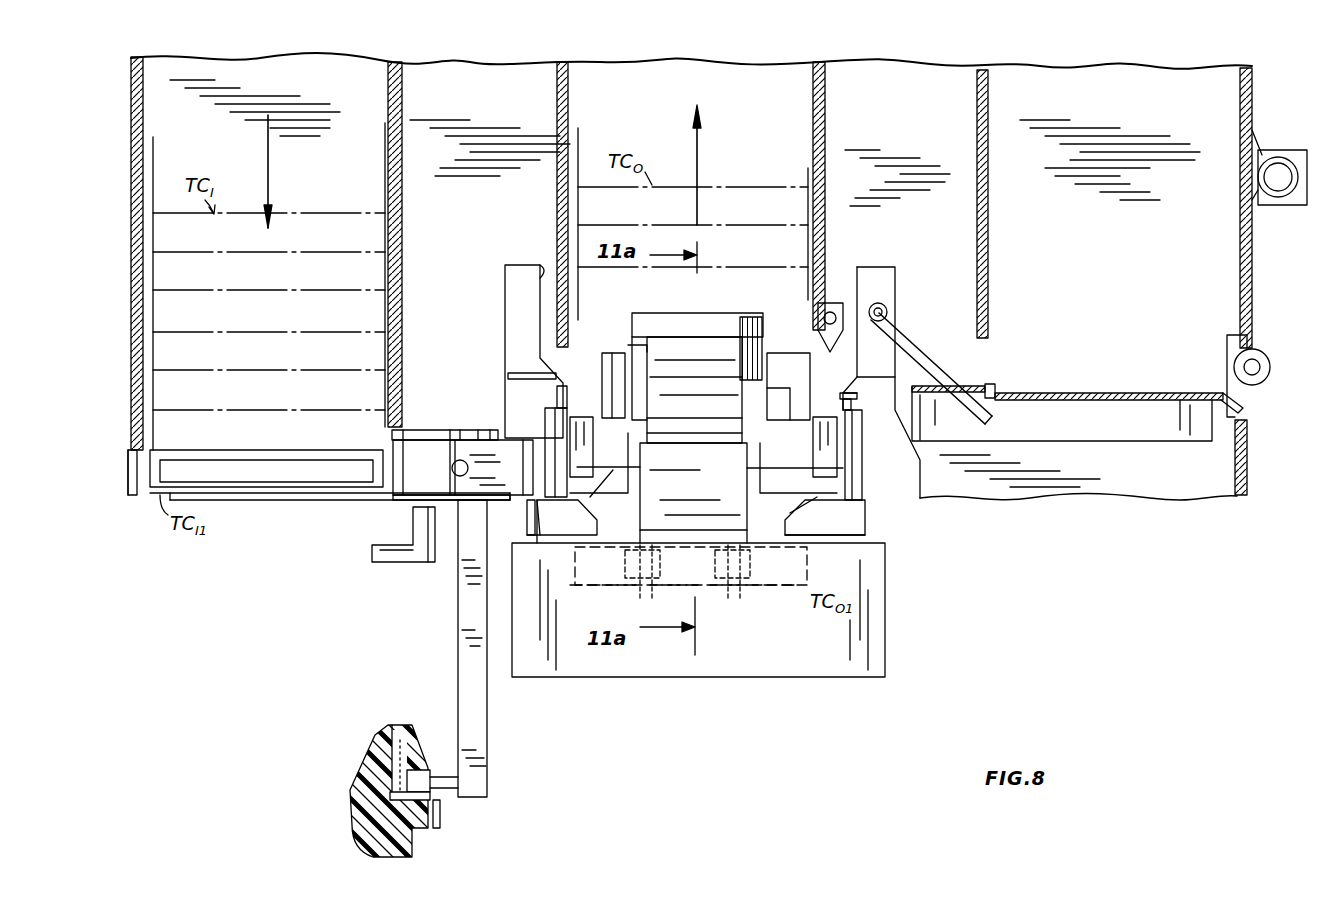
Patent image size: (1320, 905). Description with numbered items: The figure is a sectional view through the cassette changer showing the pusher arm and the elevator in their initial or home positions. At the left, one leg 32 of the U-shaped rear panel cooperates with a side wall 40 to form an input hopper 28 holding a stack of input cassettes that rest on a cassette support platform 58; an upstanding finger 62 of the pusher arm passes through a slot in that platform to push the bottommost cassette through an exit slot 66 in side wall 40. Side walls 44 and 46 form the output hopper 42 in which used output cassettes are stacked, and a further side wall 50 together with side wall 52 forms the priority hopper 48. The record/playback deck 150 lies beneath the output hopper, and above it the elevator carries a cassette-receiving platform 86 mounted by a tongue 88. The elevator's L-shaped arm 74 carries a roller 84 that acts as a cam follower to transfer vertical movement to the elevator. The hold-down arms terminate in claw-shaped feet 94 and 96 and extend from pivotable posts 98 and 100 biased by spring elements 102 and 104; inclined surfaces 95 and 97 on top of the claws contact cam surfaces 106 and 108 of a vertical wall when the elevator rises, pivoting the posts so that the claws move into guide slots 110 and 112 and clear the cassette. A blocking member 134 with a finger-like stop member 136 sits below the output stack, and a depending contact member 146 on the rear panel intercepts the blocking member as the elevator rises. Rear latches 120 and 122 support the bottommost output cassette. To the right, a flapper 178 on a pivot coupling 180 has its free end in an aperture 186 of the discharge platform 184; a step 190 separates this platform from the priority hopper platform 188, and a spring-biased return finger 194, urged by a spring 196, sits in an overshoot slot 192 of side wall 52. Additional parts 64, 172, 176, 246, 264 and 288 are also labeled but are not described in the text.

The input hopper 28 is at (233, 74).
The leg of U-shaped rear panel 32 is at (143, 123).
The side wall 40 is at (386, 91).
The output hopper 42 is at (706, 78).
The side wall 44 is at (570, 93).
The side wall 46 is at (812, 93).
The priority hopper 48 is at (1083, 90).
The side wall 50 is at (988, 130).
The side wall 52 is at (1240, 115).
The cassette support platform 58 is at (279, 501).
The upstanding finger 62 is at (410, 522).
The wall bottom edge 64 is at (132, 494).
The exit slot 66 is at (398, 430).
The L-shaped arm 74 is at (488, 766).
The roller 84 is at (428, 768).
The cassette-receiving platform 86 is at (600, 588).
The tongue 88 is at (752, 548).
The claw-shaped foot 94 is at (866, 532).
The inclined surface 95 is at (795, 505).
The claw-shaped foot 96 is at (537, 545).
The inclined surface 97 is at (590, 512).
The pivotable post 98 is at (855, 488).
The pivotable post 100 is at (546, 422).
The spring element 102 is at (860, 405).
The spring element 104 is at (556, 393).
The cam surface 106 is at (850, 396).
The cam surface 108 is at (543, 360).
The guide slot 110 is at (872, 272).
The guide slot 112 is at (505, 268).
The rear latch 120 is at (785, 352).
The rear latch 122 is at (617, 380).
The blocking member 134 is at (665, 445).
The stop member 136 is at (700, 325).
The depending contact member 146 is at (700, 398).
The record/playback deck 150 is at (778, 678).
The strut 172 is at (525, 518).
The pivot block 176 is at (826, 340).
The flapper 178 is at (938, 372).
The pivot coupling 180 is at (888, 313).
The discharge platform 184 is at (930, 430).
The aperture 186 is at (972, 392).
The priority hopper platform 188 is at (1112, 401).
The step 190 is at (996, 390).
The overshoot slot 192 is at (1228, 348).
The return finger 194 is at (1258, 385).
The spring 196 is at (1280, 156).
The plate 246 is at (437, 800).
The cam body 264 is at (440, 838).
The block 288 is at (497, 437).